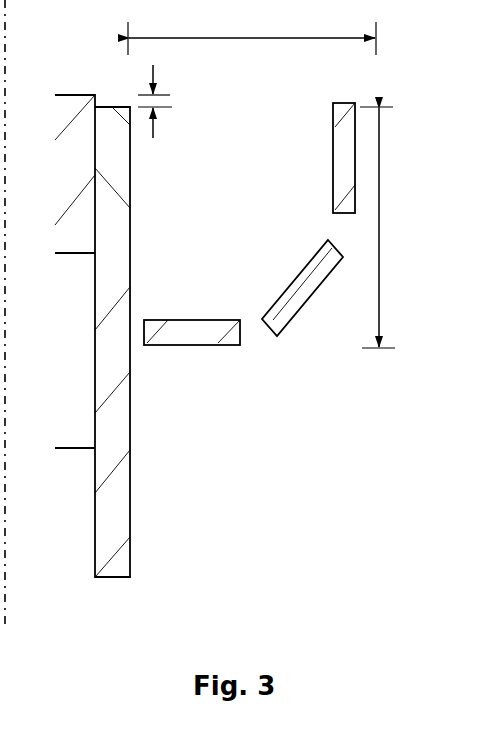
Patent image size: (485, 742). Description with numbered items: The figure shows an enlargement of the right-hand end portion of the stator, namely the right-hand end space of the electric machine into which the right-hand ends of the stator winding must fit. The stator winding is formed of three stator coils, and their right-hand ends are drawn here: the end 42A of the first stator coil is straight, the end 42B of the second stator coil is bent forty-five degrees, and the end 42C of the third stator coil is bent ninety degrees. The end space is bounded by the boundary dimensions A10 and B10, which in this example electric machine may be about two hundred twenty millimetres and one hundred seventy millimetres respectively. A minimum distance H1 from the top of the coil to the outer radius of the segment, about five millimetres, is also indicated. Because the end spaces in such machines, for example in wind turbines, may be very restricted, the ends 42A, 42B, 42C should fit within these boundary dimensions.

The end of the first stator coil 42A is at (343, 148).
The end of the second stator coil 42B is at (300, 278).
The end of the third stator coil 42C is at (192, 327).
The boundary dimension A10 is at (252, 31).
The boundary dimension B10 is at (394, 227).
The minimum distance H1 is at (163, 101).